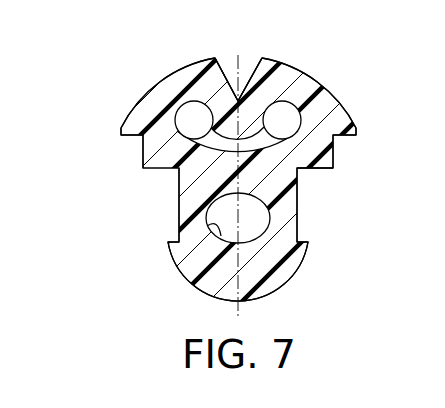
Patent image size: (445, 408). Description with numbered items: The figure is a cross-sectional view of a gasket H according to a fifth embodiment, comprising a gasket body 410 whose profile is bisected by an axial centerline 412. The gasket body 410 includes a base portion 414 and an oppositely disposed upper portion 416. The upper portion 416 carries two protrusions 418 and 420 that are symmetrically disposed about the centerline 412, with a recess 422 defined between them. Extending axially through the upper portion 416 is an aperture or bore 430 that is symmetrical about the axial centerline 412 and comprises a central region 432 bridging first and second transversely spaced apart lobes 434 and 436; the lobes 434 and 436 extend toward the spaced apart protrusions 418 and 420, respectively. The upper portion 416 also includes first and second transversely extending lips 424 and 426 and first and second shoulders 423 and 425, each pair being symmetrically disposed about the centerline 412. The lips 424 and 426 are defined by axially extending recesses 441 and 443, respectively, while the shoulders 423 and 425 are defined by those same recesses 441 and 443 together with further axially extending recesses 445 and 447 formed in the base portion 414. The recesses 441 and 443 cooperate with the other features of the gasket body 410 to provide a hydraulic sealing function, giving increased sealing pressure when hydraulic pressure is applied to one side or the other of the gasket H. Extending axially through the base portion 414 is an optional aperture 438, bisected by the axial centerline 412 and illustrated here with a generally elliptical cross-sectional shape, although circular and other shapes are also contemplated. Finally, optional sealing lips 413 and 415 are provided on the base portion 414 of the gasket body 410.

The gasket body 410 is at (153, 184).
The axial centerline 412 is at (236, 309).
The sealing lip 413 is at (178, 241).
The base portion 414 is at (283, 268).
The sealing lip 415 is at (306, 241).
The upper portion 416 is at (151, 108).
The protrusion 418 is at (198, 70).
The protrusion 420 is at (264, 62).
The recess 422 is at (249, 72).
The shoulder 423 is at (144, 153).
The lip 424 is at (125, 121).
The shoulder 425 is at (334, 160).
The lip 426 is at (354, 121).
The bore 430 is at (302, 176).
The central region 432 is at (241, 133).
The lobe 434 is at (154, 110).
The lobe 436 is at (298, 102).
The aperture 438 is at (210, 234).
The recess 441 is at (128, 136).
The recess 443 is at (347, 137).
The recess 445 is at (167, 188).
The recess 447 is at (308, 190).
The gasket H is at (351, 259).